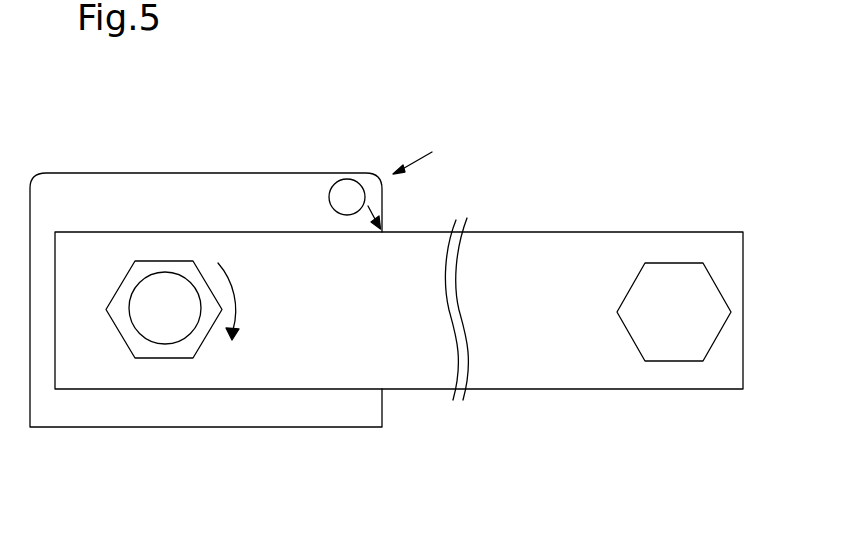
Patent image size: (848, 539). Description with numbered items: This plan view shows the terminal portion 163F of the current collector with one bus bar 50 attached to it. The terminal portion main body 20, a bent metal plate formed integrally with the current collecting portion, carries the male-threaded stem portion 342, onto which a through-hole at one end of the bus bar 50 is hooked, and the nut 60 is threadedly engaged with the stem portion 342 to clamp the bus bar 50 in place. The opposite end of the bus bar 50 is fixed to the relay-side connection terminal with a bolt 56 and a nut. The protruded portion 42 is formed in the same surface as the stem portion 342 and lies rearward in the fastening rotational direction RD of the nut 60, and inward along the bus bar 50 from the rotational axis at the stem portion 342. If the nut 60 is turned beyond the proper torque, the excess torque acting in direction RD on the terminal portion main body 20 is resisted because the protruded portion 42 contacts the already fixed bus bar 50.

The terminal portion main body 20 is at (69, 185).
The protruded portion 42 is at (347, 192).
The terminal portion 163F is at (441, 158).
The bus bar 50 is at (425, 375).
The nut 60 is at (127, 335).
The stem portion 342 is at (173, 328).
The fastening rotational direction RD is at (233, 283).
The bolt 56 is at (676, 330).